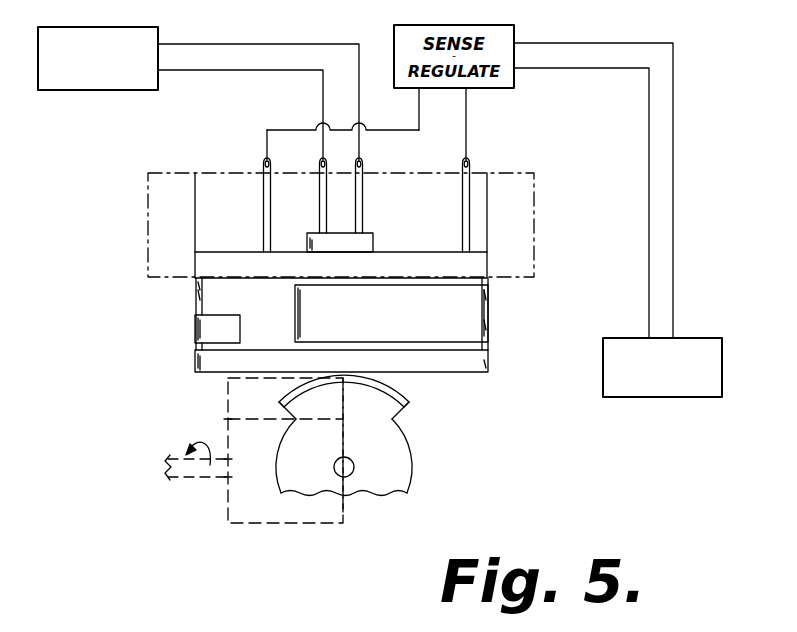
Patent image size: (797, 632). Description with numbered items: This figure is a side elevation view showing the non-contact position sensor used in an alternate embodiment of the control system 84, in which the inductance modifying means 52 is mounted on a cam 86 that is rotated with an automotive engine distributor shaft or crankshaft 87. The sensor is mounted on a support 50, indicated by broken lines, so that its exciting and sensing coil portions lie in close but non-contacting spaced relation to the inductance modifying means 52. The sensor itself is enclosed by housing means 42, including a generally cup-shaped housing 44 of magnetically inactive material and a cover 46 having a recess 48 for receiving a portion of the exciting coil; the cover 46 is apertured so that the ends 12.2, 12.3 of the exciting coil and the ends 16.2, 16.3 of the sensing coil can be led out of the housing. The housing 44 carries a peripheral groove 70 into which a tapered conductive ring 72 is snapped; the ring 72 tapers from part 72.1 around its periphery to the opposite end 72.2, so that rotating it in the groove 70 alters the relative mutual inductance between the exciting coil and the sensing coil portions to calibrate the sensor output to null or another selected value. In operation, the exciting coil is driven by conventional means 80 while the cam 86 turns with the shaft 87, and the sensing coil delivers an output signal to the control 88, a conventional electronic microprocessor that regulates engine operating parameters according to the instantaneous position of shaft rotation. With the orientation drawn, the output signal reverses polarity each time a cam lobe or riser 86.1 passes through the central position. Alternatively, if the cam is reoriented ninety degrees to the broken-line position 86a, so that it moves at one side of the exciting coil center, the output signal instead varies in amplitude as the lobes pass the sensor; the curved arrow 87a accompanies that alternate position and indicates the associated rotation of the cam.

The exciting coil drive means 80 is at (151, 33).
The control system 84 is at (681, 105).
The control 88 is at (699, 341).
The support 50 is at (170, 200).
The cover 46 is at (212, 251).
The peripheral groove 70 is at (224, 282).
The recess 48 is at (376, 247).
The sensing coil end 16.2 is at (263, 196).
The exciting coil end 12.2 is at (320, 196).
The exciting coil end 12.3 is at (363, 192).
The sensing coil end 16.3 is at (462, 210).
The housing 44 is at (206, 297).
The ring end 72.2 is at (258, 313).
The inductance modifying ring 72 is at (476, 314).
The ring part 72.1 is at (300, 314).
The housing means 42 is at (195, 348).
The reoriented cam position 86a is at (228, 388).
The cam rotation direction 87a is at (173, 452).
The inductance modifying means 52 is at (392, 378).
The cam 86 is at (381, 409).
The cam lobe 86.1 is at (400, 408).
The distributor shaft or crankshaft 87 is at (353, 462).